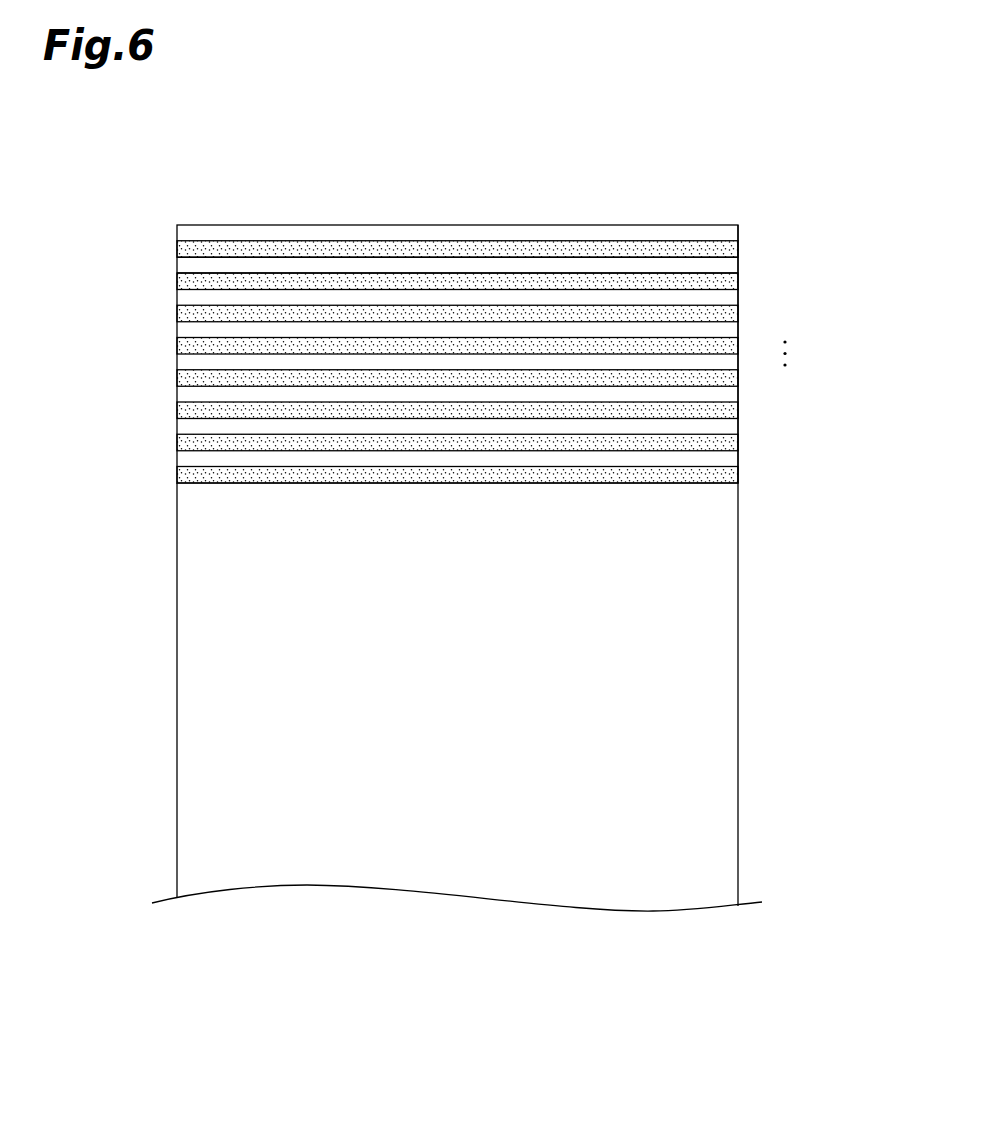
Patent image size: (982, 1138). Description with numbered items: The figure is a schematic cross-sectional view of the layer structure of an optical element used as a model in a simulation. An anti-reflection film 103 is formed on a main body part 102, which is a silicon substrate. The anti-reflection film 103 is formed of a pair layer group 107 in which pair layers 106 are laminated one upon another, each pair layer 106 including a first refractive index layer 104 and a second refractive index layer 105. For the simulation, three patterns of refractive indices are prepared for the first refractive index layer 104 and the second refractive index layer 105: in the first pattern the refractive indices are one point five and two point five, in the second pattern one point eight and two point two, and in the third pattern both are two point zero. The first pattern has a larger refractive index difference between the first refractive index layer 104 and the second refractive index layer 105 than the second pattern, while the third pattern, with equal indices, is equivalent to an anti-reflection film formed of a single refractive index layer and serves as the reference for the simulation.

The main body part 102 is at (190, 599).
The anti-reflection film 103 is at (436, 318).
The first refractive index layer 104 is at (525, 283).
The second refractive index layer 105 is at (603, 268).
The pair layer 106 is at (747, 225).
The pair layer group 107 is at (819, 225).